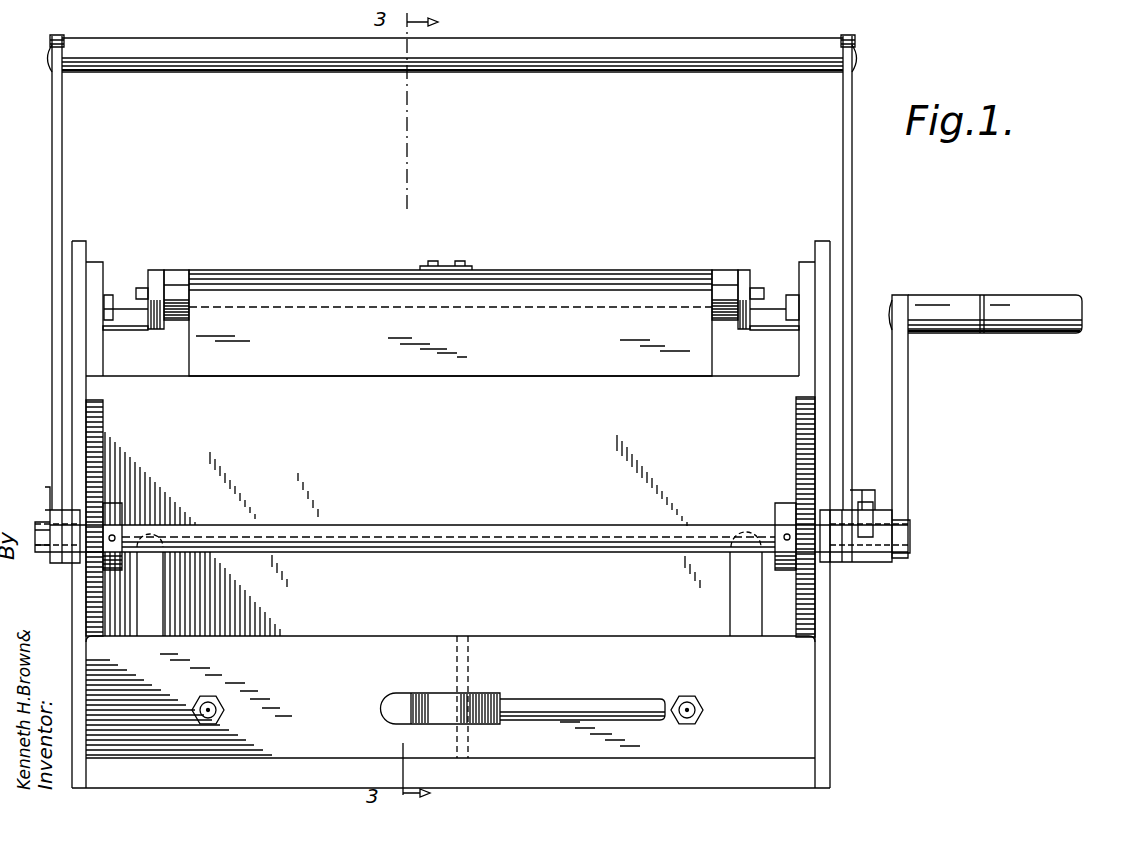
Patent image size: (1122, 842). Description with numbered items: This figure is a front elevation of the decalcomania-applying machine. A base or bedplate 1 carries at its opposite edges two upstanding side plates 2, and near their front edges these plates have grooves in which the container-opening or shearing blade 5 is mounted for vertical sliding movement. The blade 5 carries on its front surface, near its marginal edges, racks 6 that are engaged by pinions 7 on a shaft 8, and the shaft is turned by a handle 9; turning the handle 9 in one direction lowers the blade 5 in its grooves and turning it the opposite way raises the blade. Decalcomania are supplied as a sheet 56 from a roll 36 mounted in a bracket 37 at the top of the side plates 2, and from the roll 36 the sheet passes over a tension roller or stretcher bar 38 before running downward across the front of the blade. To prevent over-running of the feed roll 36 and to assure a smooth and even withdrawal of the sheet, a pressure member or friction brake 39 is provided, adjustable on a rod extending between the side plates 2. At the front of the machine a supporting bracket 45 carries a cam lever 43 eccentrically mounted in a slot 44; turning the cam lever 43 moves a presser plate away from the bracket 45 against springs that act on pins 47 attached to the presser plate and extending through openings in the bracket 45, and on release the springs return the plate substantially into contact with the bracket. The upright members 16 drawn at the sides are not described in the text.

The base or bedplate 1 is at (800, 772).
The side plates 2 is at (78, 340).
The container-opening or shearing blade 5 is at (590, 382).
The racks 6 is at (103, 443).
The pinions 7 is at (103, 490).
The shaft 8 is at (540, 525).
The handle 9 is at (948, 333).
The upright post 16 is at (56, 207).
The roll 36 is at (182, 270).
The bracket 37 is at (154, 270).
The tension roller or stretcher bar 38 is at (716, 280).
The pressure member or friction brake 39 is at (446, 266).
The cam lever 43 is at (490, 697).
The slot 44 is at (384, 708).
The supporting bracket 45 is at (800, 703).
The pins 47 is at (220, 706).
The sheet 56 is at (450, 323).